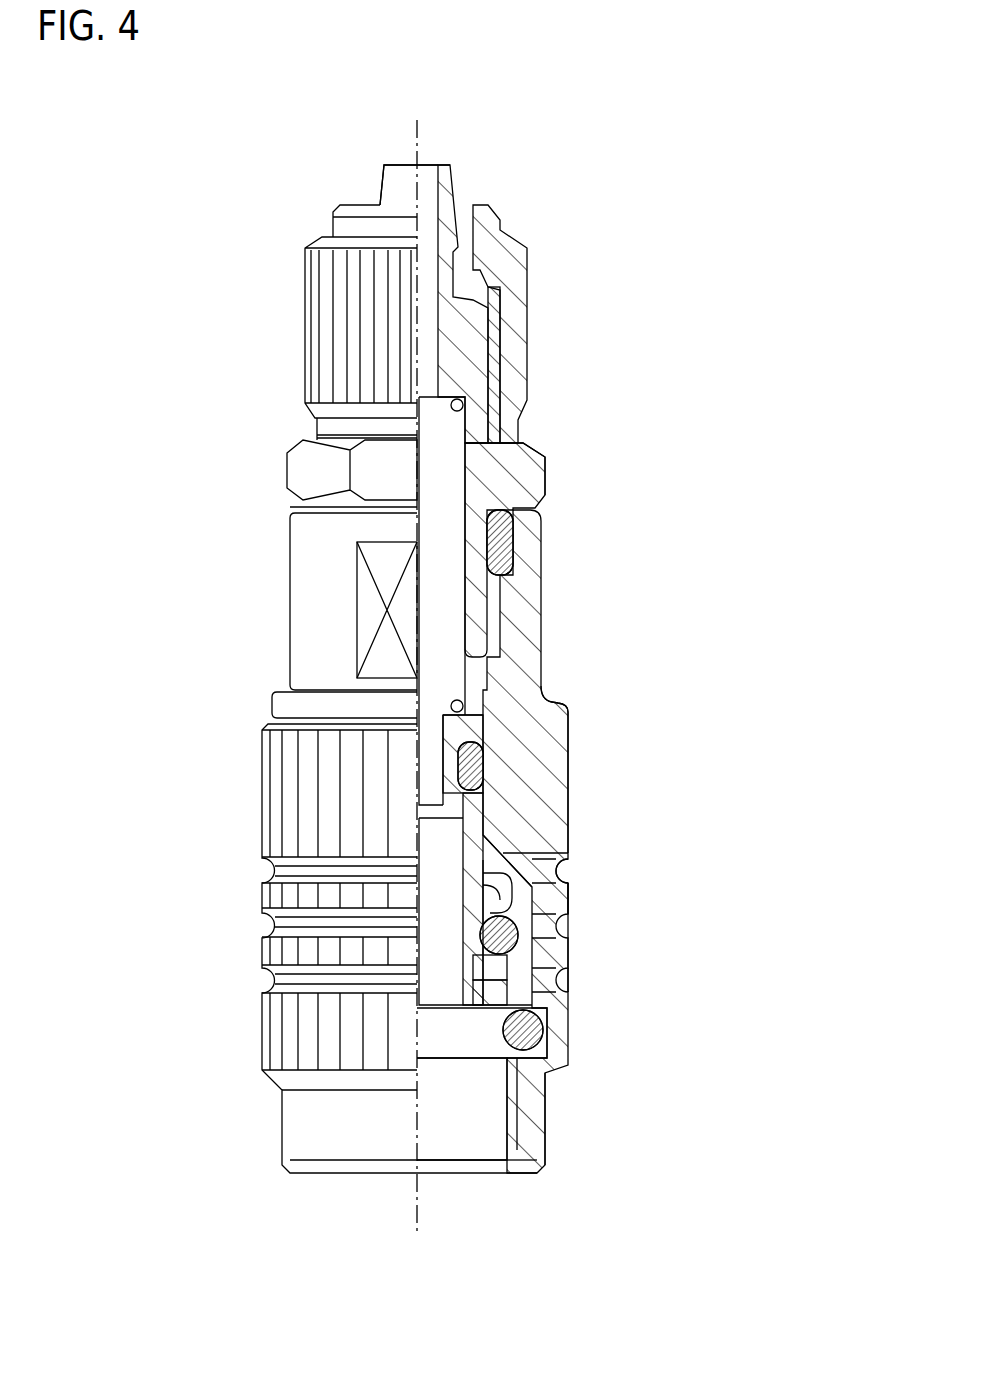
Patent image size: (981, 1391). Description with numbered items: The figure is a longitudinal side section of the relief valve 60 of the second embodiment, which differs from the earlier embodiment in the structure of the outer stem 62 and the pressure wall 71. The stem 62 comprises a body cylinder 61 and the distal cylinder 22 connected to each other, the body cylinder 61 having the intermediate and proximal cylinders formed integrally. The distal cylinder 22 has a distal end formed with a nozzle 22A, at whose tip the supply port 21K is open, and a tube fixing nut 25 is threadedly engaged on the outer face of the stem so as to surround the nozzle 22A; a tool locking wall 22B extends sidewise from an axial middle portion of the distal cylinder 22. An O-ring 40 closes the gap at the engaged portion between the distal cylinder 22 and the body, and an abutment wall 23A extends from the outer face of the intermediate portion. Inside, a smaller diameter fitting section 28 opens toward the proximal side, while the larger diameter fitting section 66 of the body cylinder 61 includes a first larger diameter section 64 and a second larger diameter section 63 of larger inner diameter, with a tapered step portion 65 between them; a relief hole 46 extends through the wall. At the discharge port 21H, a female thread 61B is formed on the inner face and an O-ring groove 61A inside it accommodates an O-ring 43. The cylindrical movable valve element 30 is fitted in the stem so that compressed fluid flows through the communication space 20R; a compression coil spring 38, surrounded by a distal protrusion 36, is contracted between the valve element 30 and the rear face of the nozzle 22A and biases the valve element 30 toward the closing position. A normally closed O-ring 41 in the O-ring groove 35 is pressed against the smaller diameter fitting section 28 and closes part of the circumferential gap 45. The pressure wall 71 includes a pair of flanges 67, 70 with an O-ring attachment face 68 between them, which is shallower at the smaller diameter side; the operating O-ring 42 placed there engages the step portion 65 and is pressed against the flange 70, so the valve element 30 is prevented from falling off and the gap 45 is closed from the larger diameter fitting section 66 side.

The relief valve 60 is at (647, 175).
The supply port 21K is at (425, 172).
The discharge port 21H is at (433, 1140).
The nozzle 22A is at (450, 195).
The tool locking wall 22B is at (287, 470).
The distal cylinder 22 is at (520, 480).
The tube fixing nut 25 is at (517, 290).
The outer stem 62 is at (537, 443).
The body cylinder 61 is at (520, 545).
The O-ring groove 61A is at (545, 1093).
The female thread 61B is at (493, 1160).
The O-ring 40 is at (488, 540).
The communication space 20R is at (432, 597).
The distal protrusion 36 is at (452, 703).
The compression coil spring 38 is at (468, 718).
The abutment wall 23A is at (272, 705).
The normally closed O-ring 41 is at (462, 748).
The O-ring groove 35 is at (443, 792).
The smaller diameter fitting section 28 is at (492, 767).
The circumferential gap 45 is at (510, 850).
The relief hole 46 is at (545, 867).
The operating O-ring 42 is at (478, 870).
The flange 70 is at (490, 900).
The O-ring attachment face 68 is at (475, 962).
The flange 67 is at (470, 992).
The pressure wall 71 is at (195, 905).
The second larger diameter section 63 is at (540, 920).
The tapered step portion 65 is at (525, 940).
The first larger diameter section 64 is at (540, 988).
The larger diameter fitting section 66 is at (647, 903).
The movable valve element 30 is at (420, 1010).
The O-ring 43 is at (545, 1027).